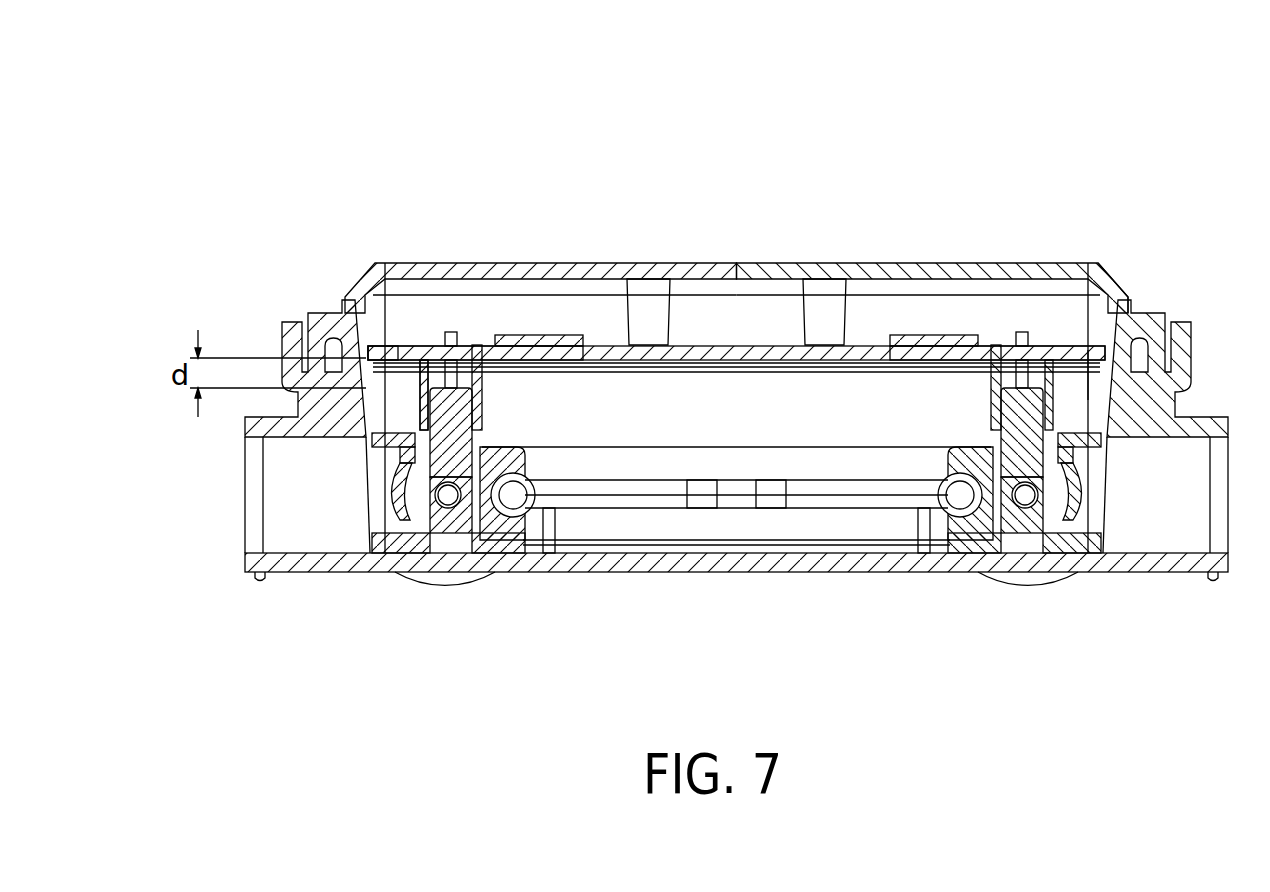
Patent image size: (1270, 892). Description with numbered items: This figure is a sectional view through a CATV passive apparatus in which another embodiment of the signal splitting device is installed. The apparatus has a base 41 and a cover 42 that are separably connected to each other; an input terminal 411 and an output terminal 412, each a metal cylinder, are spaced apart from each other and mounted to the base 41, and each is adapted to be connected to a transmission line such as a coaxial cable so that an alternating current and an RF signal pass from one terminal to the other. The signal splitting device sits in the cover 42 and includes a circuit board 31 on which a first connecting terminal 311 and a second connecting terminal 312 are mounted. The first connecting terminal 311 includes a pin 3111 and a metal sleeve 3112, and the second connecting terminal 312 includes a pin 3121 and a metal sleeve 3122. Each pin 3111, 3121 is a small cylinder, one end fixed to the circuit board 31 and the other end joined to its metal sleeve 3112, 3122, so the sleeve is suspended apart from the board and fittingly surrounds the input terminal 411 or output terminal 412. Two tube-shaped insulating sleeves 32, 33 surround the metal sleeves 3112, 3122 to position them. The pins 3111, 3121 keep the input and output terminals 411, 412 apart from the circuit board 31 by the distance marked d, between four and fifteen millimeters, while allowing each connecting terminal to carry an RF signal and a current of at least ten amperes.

The circuit board 31 is at (863, 348).
The first connecting terminal 311 is at (555, 142).
The pin 3111 is at (519, 345).
The metal sleeve 3112 is at (356, 346).
The second connecting terminal 312 is at (1180, 142).
The pin 3121 is at (985, 380).
The metal sleeve 3122 is at (1122, 293).
The insulating sleeve 32 is at (423, 430).
The insulating sleeve 33 is at (1085, 378).
The base 41 is at (850, 572).
The input terminal 411 is at (460, 415).
The output terminal 412 is at (1012, 414).
The cover 42 is at (718, 262).